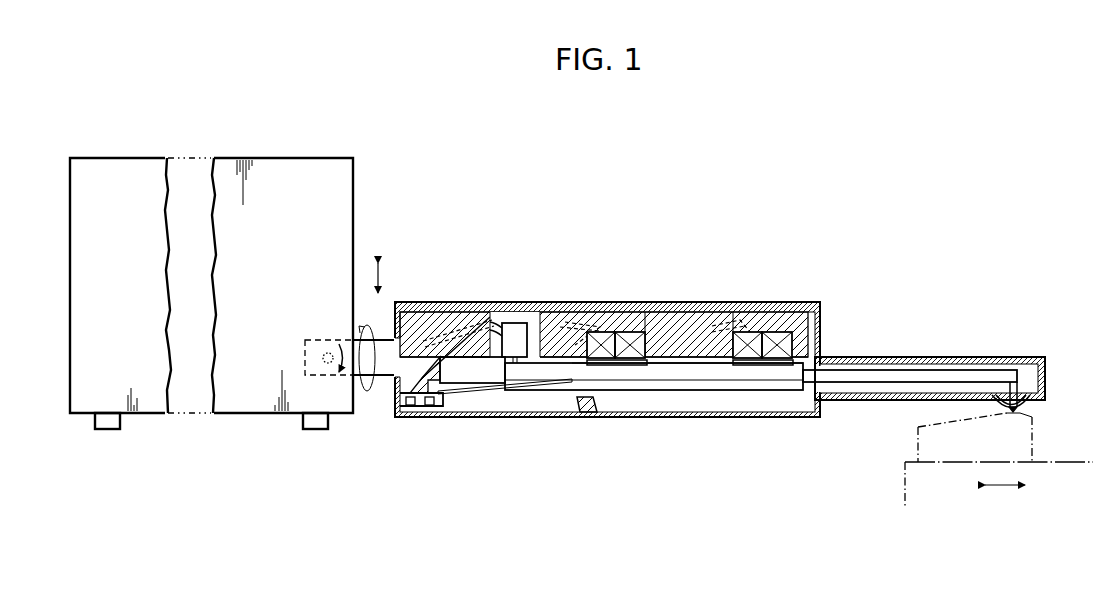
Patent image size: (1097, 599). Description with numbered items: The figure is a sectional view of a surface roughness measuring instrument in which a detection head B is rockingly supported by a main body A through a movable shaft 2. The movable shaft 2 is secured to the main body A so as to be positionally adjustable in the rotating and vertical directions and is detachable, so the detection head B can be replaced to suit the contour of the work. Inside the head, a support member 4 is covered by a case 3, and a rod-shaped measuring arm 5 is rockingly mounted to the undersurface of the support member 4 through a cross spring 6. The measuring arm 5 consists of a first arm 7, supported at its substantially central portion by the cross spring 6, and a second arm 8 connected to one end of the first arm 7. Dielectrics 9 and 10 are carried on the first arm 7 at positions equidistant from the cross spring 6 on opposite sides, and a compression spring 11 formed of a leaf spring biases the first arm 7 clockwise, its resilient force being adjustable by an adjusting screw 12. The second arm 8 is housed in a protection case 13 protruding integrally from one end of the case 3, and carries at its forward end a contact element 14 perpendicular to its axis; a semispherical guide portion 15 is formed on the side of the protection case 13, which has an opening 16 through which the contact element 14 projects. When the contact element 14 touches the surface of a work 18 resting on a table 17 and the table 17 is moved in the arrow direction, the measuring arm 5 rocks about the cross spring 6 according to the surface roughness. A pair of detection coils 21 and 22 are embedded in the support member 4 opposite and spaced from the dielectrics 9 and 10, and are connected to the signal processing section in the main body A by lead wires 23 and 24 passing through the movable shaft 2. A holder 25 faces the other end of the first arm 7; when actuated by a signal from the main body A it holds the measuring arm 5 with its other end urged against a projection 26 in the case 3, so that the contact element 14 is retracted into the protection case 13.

The main body A is at (292, 168).
The detection head B is at (610, 226).
The movable shaft 2 is at (390, 376).
The case 3 is at (647, 310).
The support member 4 is at (683, 320).
The measuring arm 5 is at (710, 383).
The cross spring 6 is at (695, 358).
The first arm 7 is at (657, 380).
The second arm 8 is at (885, 375).
The dielectric 9 is at (628, 366).
The dielectric 10 is at (762, 366).
The compression spring 11 is at (515, 395).
The adjusting screw 12 is at (440, 408).
The protection case 13 is at (945, 358).
The contact element 14 is at (1017, 386).
The semispherical guide portion 15 is at (1028, 399).
The opening 16 is at (1020, 414).
The table 17 is at (904, 478).
The work 18 is at (917, 435).
The detection coil 21 is at (632, 330).
The detection coil 22 is at (775, 340).
The lead wire 23 is at (575, 327).
The lead wire 24 is at (727, 313).
The holder 25 is at (515, 333).
The projection 26 is at (586, 413).